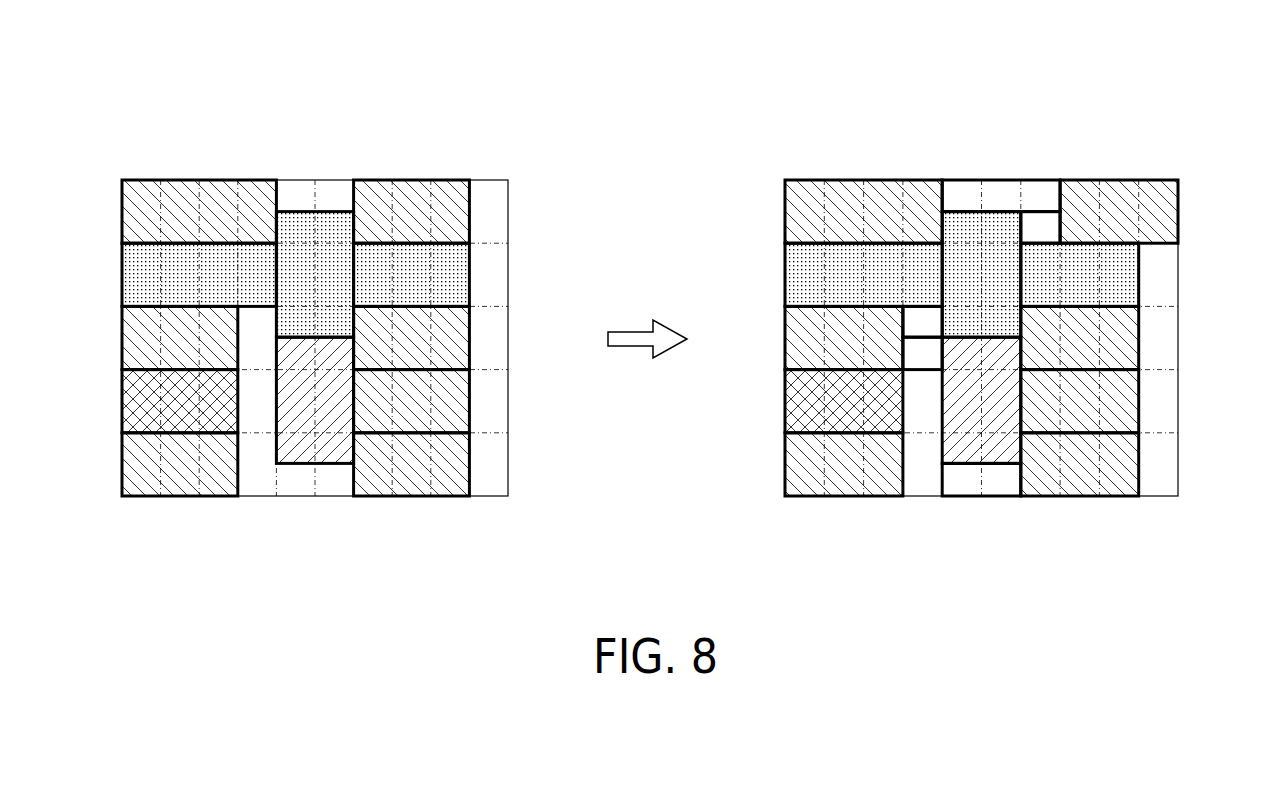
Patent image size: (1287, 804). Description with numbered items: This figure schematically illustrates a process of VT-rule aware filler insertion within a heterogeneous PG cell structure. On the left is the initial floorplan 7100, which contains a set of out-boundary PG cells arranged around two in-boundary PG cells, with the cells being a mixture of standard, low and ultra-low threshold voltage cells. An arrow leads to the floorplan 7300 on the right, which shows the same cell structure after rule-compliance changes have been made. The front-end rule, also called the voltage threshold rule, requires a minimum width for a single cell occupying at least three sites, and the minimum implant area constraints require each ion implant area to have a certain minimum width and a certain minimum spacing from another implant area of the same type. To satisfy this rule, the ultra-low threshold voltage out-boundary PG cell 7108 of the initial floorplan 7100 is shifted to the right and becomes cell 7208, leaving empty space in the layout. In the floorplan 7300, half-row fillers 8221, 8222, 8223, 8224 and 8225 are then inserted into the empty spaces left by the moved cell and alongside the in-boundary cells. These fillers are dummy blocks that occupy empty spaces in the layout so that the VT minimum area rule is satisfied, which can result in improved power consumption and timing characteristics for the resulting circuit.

The initial floorplan 7100 is at (462, 90).
The floorplan 7300 is at (1130, 90).
The out-boundary PG cell 7108 is at (445, 212).
The cell 7208 is at (1168, 212).
The half-row filler 8221 is at (1030, 190).
The half-row filler 8222 is at (1050, 232).
The half-row filler 8223 is at (1012, 482).
The half-row filler 8224 is at (926, 355).
The half-row filler 8225 is at (905, 316).